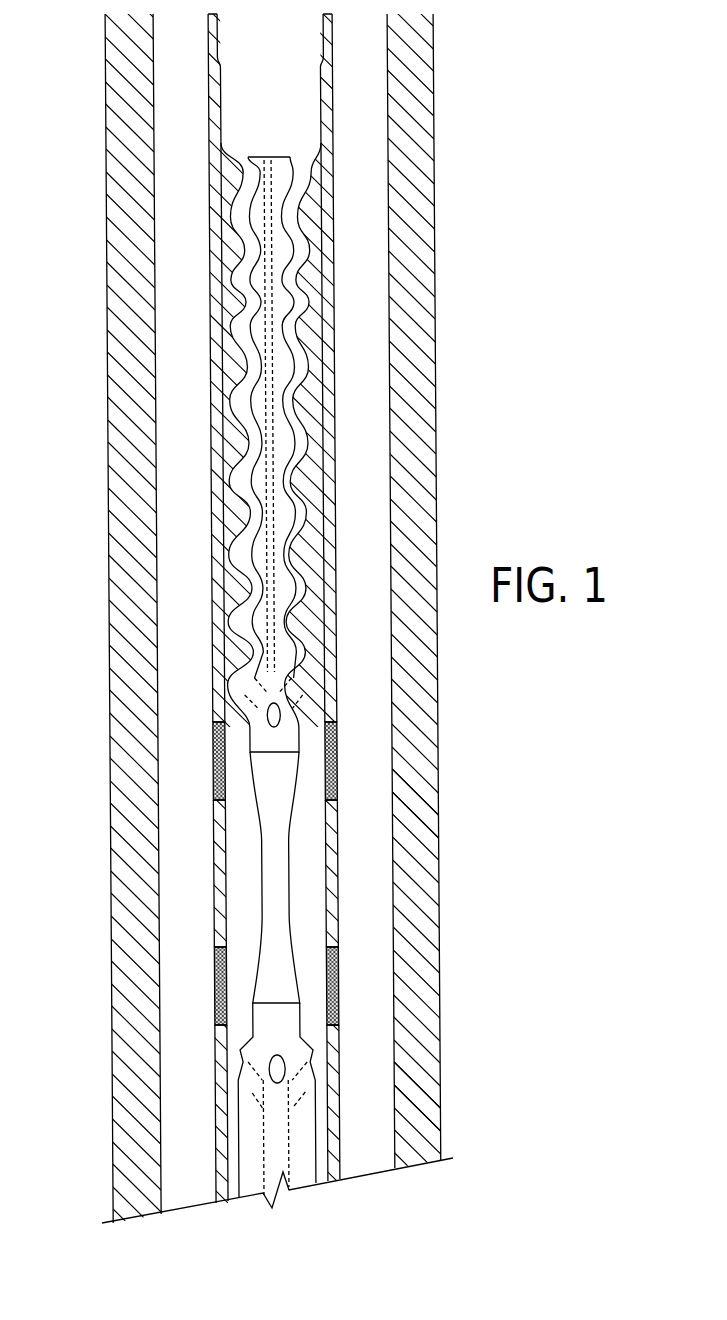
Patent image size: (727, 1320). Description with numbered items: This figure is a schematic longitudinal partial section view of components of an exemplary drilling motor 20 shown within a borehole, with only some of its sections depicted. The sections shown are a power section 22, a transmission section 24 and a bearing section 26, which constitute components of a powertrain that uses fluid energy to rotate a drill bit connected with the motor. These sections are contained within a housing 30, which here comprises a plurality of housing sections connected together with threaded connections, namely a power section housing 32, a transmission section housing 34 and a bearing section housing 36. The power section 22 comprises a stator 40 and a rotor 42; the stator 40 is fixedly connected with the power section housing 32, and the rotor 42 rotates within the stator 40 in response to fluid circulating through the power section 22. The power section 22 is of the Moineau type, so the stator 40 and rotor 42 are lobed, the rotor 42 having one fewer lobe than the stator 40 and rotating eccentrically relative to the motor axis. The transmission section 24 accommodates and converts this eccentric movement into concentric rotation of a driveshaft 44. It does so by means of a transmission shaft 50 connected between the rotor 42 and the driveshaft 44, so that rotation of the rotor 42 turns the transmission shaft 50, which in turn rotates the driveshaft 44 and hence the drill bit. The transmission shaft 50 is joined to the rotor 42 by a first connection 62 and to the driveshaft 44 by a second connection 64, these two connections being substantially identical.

The drilling motor 20 is at (358, 342).
The power section 22 is at (358, 230).
The transmission section 24 is at (360, 798).
The bearing section 26 is at (362, 1102).
The housing 30 is at (338, 447).
The power section housing 32 is at (211, 266).
The transmission section housing 34 is at (215, 872).
The bearing section housing 36 is at (218, 1097).
The stator 40 is at (232, 370).
The rotor 42 is at (241, 400).
The driveshaft 44 is at (253, 1168).
The transmission shaft 50 is at (280, 878).
The first connection 62 is at (250, 752).
The second connection 64 is at (218, 1002).